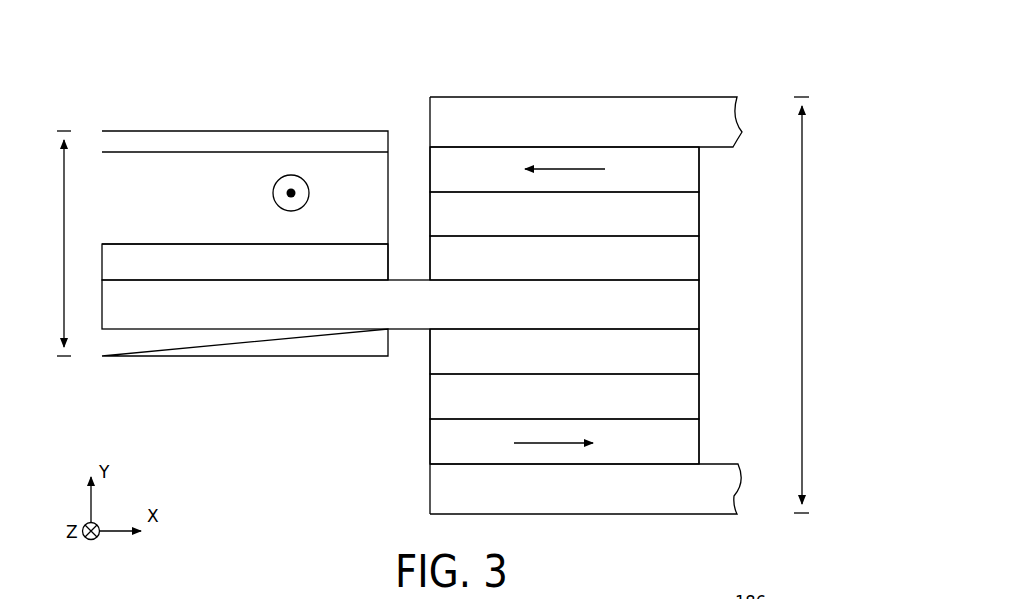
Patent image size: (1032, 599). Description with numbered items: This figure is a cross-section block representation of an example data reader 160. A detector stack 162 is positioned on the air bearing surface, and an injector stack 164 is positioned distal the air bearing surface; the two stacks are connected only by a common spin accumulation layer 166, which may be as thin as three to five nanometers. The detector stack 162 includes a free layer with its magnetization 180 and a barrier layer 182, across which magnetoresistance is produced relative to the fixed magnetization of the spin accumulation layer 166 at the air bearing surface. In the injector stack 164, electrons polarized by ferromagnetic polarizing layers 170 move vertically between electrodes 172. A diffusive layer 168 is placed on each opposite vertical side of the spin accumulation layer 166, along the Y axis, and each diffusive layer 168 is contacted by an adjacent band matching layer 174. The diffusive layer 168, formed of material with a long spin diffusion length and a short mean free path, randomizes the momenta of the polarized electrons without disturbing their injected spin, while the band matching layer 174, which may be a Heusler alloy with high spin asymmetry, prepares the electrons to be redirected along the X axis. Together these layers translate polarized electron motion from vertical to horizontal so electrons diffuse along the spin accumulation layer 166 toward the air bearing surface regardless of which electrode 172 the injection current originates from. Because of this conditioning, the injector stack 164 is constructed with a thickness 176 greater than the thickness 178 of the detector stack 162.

The data reader 160 is at (796, 34).
The detector stack 162 is at (108, 121).
The injector stack 164 is at (491, 89).
The spin accumulation layer 166 is at (694, 315).
The diffusive layer 168 is at (694, 266).
The ferromagnetic polarizing layer 170 is at (467, 178).
The electrode 172 is at (467, 132).
The band matching layer 174 is at (694, 222).
The thickness of injector stack 176 is at (803, 143).
The thickness of detector stack 178 is at (63, 175).
The free layer magnetization 180 is at (380, 208).
The barrier layer 182 is at (380, 272).